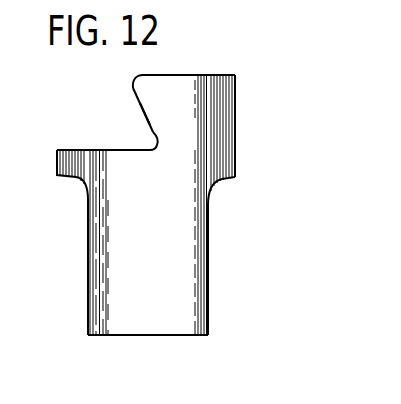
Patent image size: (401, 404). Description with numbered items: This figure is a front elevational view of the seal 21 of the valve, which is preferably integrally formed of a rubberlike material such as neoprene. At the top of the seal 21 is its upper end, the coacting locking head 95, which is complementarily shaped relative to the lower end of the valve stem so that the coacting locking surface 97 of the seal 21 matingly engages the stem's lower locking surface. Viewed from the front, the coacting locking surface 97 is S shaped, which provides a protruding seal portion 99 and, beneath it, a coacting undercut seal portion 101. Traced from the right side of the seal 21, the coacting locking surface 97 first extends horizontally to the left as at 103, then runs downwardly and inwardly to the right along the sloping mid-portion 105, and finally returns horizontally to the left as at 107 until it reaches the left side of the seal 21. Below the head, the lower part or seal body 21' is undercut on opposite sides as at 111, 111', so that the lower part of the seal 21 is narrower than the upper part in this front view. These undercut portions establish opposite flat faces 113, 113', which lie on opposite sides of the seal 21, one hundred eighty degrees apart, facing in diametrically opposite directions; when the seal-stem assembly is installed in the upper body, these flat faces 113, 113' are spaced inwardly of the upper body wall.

The seal 21 is at (217, 279).
The seal body 21' is at (83, 329).
The coacting locking head 95 is at (217, 100).
The coacting locking surface 97 is at (127, 117).
The protruding seal portion 99 is at (133, 80).
The coacting undercut seal portion 101 is at (148, 138).
The horizontal portion of coacting locking surface 103 is at (167, 74).
The sloping mid-portion 105 is at (137, 106).
The horizontal portion of coacting locking surface 107 is at (72, 148).
The undercut 111 is at (51, 198).
The undercut 111' is at (250, 184).
The flat face 113 is at (49, 267).
The flat face 113' is at (240, 270).